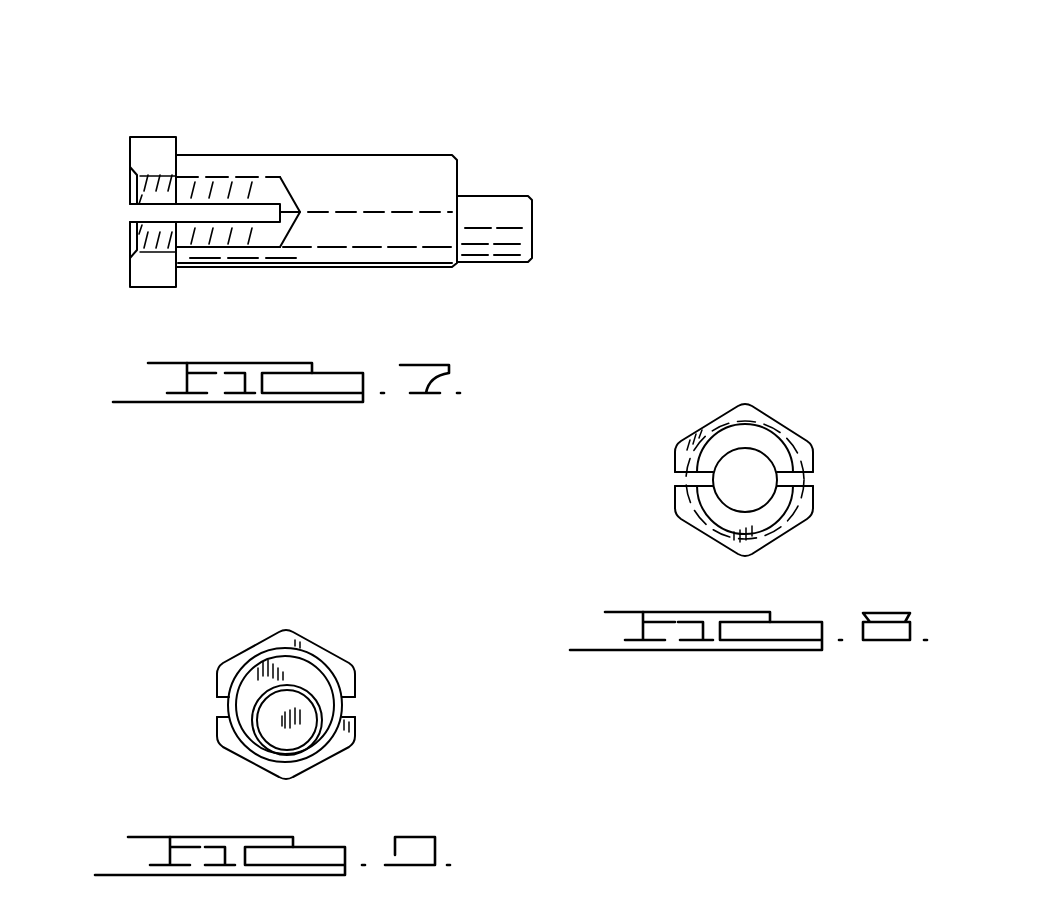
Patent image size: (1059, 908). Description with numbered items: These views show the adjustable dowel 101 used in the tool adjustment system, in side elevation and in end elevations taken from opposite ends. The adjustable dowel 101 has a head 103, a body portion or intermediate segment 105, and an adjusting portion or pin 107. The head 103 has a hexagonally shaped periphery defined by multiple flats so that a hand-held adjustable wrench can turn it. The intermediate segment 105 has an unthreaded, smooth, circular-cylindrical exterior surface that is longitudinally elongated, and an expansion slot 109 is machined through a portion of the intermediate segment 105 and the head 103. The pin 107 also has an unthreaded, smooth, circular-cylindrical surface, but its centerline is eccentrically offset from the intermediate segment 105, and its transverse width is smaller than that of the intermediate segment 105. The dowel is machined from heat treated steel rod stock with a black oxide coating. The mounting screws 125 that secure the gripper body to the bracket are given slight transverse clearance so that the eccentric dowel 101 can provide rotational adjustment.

In FIG. 7, the adjustable dowel 101 is at (309, 174).
In FIG. 8, the adjustable dowel 101 is at (751, 434).
In FIG. 9, the adjustable dowel 101 is at (273, 693).
In FIG. 7, the head 103 is at (150, 137).
In FIG. 8, the head 103 is at (690, 527).
In FIG. 9, the head 103 is at (215, 683).
In FIG. 7, the intermediate segment 105 is at (362, 258).
In FIG. 9, the intermediate segment 105 is at (322, 660).
In FIG. 7, the pin 107 is at (507, 200).
In FIG. 9, the pin 107 is at (318, 704).
In FIG. 7, the expansion slot 109 is at (155, 207).
In FIG. 8, the expansion slot 109 is at (800, 481).
In FIG. 8, the mounting screw 125 is at (722, 490).